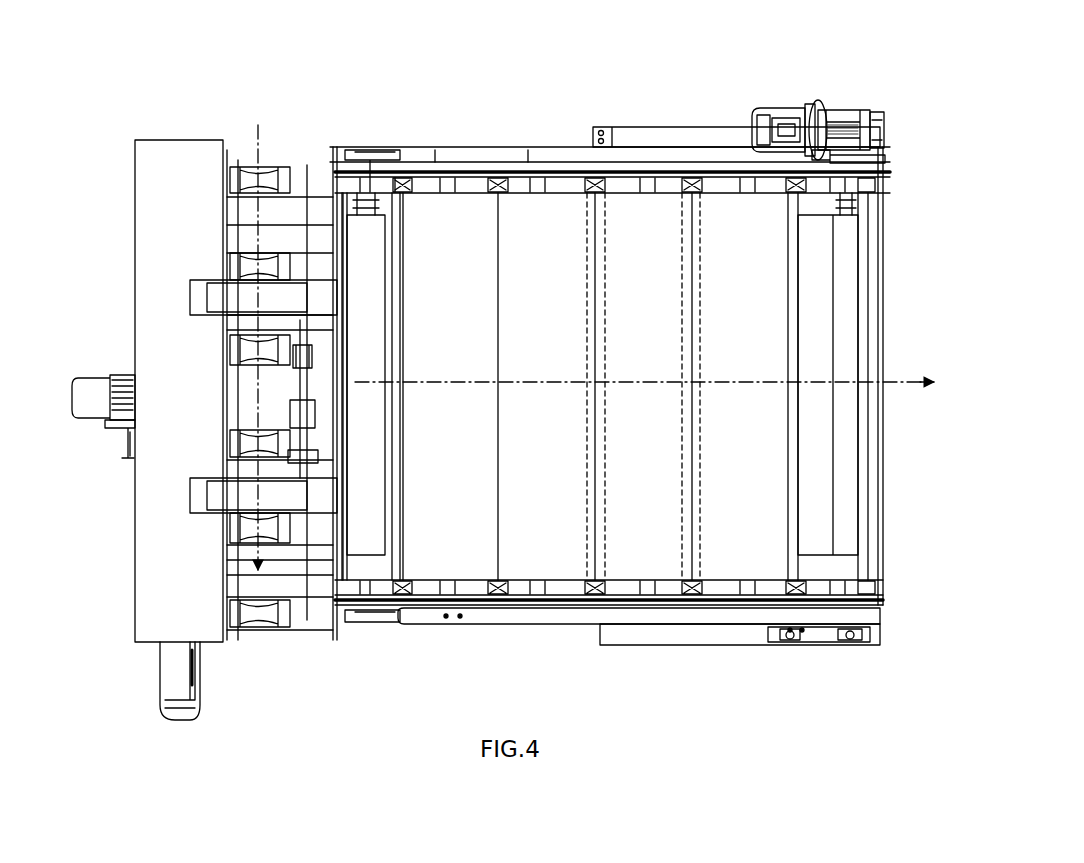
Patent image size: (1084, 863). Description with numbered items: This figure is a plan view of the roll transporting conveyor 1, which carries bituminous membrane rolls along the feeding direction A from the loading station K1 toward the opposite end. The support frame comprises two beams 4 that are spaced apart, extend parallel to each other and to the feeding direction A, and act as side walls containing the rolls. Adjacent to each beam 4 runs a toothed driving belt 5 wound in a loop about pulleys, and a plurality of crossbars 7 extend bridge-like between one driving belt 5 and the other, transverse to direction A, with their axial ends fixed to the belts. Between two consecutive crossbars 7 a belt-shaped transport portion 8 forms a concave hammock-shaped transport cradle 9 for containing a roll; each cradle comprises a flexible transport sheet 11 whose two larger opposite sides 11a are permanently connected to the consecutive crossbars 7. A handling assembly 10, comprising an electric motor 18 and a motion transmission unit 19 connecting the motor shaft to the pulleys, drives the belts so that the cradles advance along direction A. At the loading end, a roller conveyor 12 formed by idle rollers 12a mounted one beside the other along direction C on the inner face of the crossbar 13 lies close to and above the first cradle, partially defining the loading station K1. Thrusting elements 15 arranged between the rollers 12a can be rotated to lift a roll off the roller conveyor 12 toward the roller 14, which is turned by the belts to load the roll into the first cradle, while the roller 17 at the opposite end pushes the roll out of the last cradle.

The roll transporting conveyor 1 is at (350, 660).
The beam 4 is at (690, 147).
The driving belt 5 is at (727, 162).
The crossbar 7 is at (683, 190).
The belt-shaped transport portion 8 is at (460, 535).
The hammock-shaped transport cradle 9 is at (752, 350).
The handling assembly 10 is at (840, 95).
The transport sheet 11 is at (478, 147).
The larger side of the transport sheet 11a is at (435, 147).
The roller conveyor 12 is at (265, 648).
The roller 12a is at (243, 168).
The crossbar of the support frame 13 is at (160, 590).
The roller 14 is at (352, 213).
The thrusting element 15 is at (225, 293).
The roller 17 is at (825, 448).
The electric motor 18 is at (788, 108).
The motion transmission unit 19 is at (870, 105).
The feeding direction A is at (902, 382).
The direction C is at (258, 133).
The loading station K1 is at (400, 192).